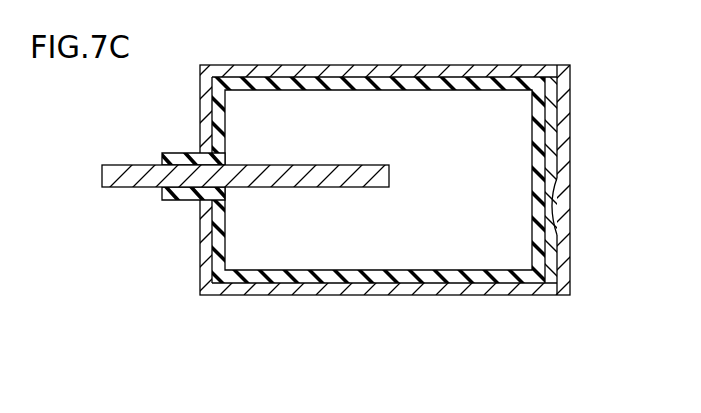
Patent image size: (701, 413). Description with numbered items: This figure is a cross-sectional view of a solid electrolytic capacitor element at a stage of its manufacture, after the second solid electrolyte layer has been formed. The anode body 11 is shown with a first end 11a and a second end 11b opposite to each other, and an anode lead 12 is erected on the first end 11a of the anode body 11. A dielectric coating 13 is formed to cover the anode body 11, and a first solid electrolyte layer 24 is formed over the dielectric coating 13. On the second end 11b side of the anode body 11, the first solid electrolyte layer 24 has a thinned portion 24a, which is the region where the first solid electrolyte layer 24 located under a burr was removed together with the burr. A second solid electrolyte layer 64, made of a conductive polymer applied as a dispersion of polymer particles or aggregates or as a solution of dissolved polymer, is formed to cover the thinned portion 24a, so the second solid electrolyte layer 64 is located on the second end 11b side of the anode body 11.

The anode body 11 is at (405, 245).
The first end 11a is at (243, 245).
The second end 11b is at (517, 245).
The anode lead 12 is at (125, 173).
The dielectric coating 13 is at (455, 277).
The first solid electrolyte layer 24 is at (488, 288).
The thinned portion 24a is at (550, 212).
The second solid electrolyte layer 64 is at (563, 176).